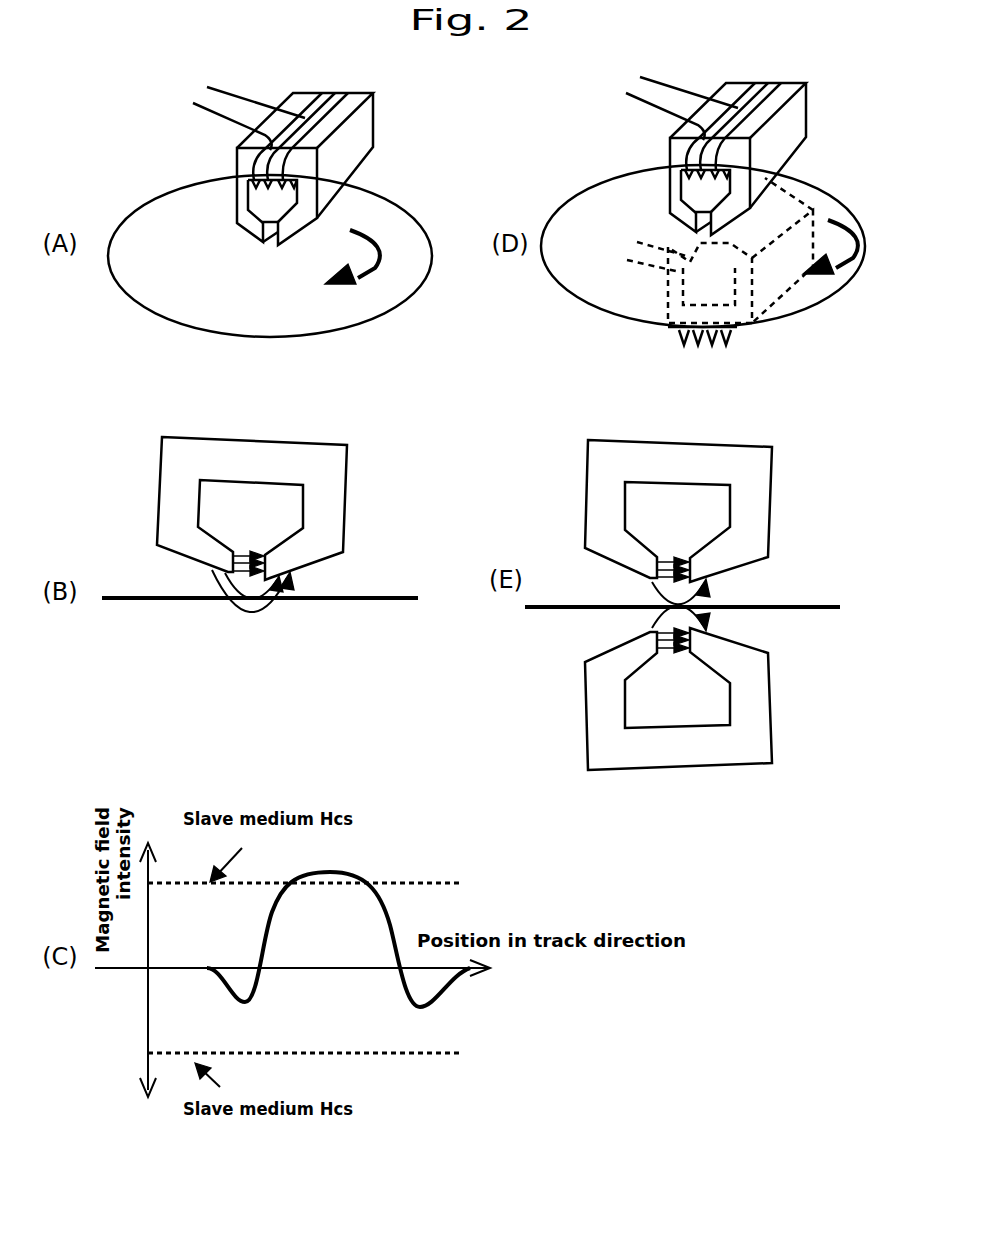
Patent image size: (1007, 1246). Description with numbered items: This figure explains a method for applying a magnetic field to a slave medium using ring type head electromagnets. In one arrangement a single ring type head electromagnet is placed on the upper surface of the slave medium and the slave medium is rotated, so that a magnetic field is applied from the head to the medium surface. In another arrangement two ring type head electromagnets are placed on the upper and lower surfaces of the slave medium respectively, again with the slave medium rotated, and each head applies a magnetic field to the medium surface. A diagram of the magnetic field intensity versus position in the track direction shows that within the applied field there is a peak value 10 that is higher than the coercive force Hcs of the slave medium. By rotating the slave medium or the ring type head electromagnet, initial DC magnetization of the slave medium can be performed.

The peak value 10 is at (333, 870).